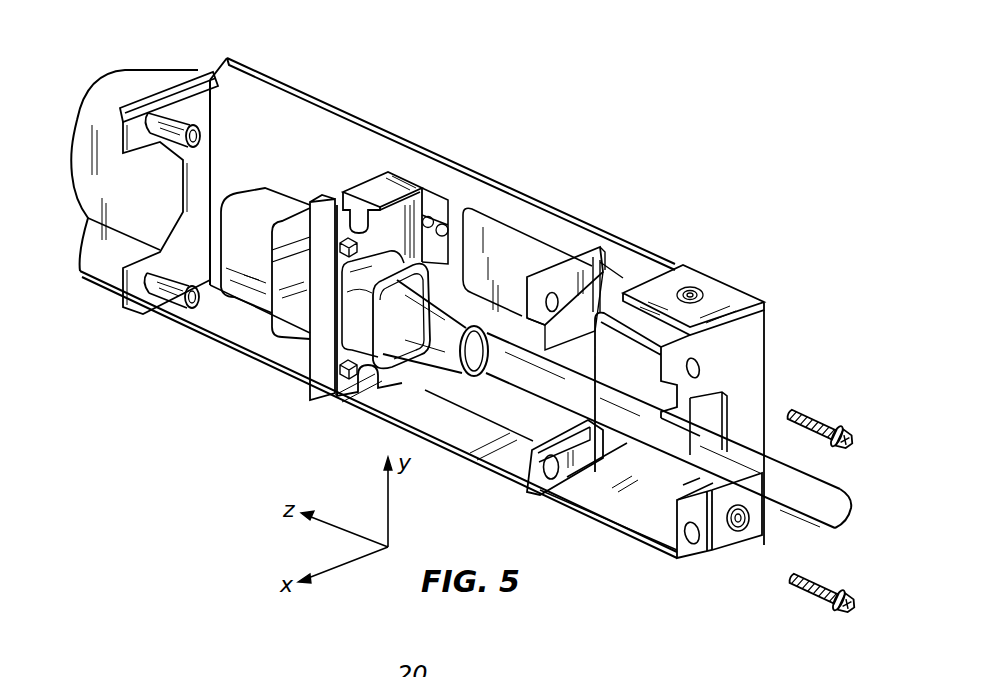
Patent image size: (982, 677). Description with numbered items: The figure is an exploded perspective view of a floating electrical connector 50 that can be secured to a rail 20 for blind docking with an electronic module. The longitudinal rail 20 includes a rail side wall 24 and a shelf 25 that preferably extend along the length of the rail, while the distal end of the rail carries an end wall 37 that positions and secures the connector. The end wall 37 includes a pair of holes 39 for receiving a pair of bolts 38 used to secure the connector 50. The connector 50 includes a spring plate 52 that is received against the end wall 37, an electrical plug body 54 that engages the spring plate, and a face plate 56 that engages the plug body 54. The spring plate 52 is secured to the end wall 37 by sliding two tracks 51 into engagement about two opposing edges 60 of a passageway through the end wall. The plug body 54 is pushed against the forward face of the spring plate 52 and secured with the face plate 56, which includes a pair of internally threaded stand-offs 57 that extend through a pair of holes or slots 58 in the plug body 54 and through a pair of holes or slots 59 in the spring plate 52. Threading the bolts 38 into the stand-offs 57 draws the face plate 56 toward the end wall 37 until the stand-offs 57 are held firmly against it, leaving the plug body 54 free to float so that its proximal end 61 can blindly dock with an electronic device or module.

The rail 20 is at (347, 112).
The rail side wall 24 is at (407, 160).
The shelf 25 is at (220, 323).
The end wall 37 is at (747, 383).
The bolts 38 is at (823, 417).
The holes 39 is at (700, 362).
The floating electrical connector 50 is at (263, 444).
The tracks 51 is at (557, 358).
The spring plate 52 is at (548, 247).
The electrical plug body 54 is at (372, 183).
The face plate 56 is at (162, 92).
The stand-offs 57 is at (187, 116).
The holes or slots 58 is at (417, 212).
The holes or slots 59 is at (527, 270).
The opposing edges 60 is at (700, 413).
The proximal end 61 is at (235, 195).